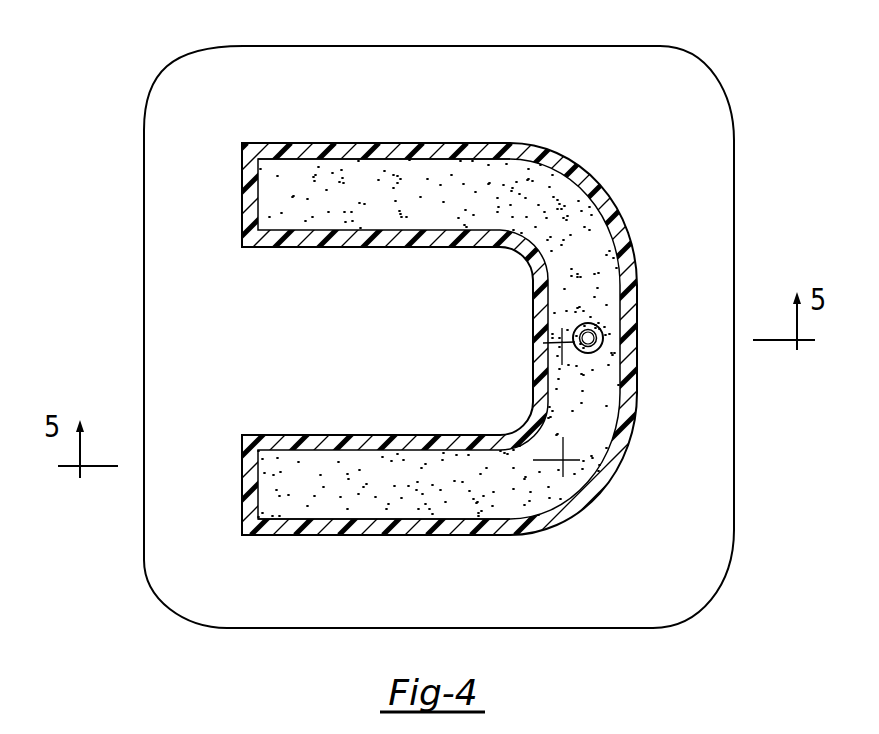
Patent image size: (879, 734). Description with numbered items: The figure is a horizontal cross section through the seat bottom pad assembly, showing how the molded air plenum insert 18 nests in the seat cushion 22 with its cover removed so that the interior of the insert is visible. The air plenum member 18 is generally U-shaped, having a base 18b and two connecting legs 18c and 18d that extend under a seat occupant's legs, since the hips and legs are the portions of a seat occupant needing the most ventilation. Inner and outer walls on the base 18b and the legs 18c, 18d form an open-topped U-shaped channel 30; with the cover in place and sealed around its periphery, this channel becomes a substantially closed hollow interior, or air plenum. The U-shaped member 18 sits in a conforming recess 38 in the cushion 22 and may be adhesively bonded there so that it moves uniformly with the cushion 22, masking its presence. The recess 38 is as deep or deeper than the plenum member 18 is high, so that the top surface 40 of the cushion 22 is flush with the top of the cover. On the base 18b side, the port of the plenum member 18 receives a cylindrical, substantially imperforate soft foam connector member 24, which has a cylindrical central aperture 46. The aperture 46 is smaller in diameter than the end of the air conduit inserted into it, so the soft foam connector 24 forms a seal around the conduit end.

The molded air plenum insert 18 is at (592, 166).
The base 18b is at (640, 377).
The connecting leg 18c is at (276, 247).
The connecting leg 18d is at (272, 435).
The seat cushion 22 is at (718, 588).
The foam connector member 24 is at (578, 328).
The U-shaped channel 30 is at (358, 160).
The recess 38 is at (340, 518).
The top surface of cushion 40 is at (710, 477).
The central aperture 46 is at (575, 342).